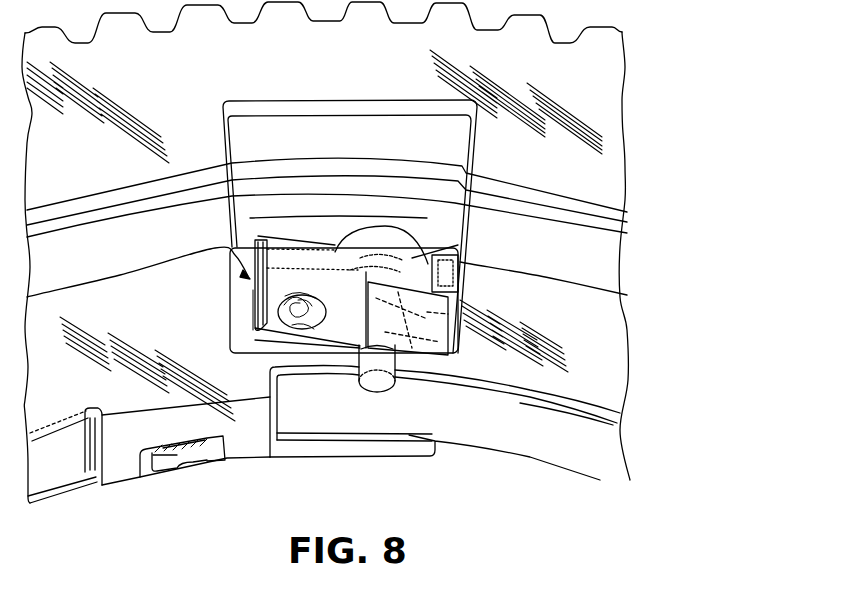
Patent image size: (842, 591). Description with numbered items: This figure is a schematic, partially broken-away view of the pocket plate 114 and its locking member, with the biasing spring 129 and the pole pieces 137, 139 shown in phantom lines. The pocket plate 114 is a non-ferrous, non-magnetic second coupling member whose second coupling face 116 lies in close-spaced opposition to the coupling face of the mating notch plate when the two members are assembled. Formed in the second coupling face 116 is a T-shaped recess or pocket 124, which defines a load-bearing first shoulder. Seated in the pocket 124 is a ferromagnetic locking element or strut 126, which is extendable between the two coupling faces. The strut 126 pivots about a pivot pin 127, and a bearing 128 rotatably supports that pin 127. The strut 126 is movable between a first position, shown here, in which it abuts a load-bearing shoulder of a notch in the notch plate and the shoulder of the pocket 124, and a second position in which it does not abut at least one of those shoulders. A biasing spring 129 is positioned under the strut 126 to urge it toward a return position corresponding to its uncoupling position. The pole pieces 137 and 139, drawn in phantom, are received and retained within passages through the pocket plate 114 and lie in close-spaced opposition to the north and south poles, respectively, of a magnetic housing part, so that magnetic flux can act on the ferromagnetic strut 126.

The pocket plate 114 is at (628, 345).
The second coupling face 116 is at (590, 383).
The pocket 124 is at (238, 246).
The locking strut 126 is at (230, 249).
The pivot pin 127 is at (379, 388).
The bearing 128 is at (400, 232).
The biasing spring 129 is at (255, 296).
The first pole piece 137 is at (452, 298).
The second pole piece 139 is at (433, 243).